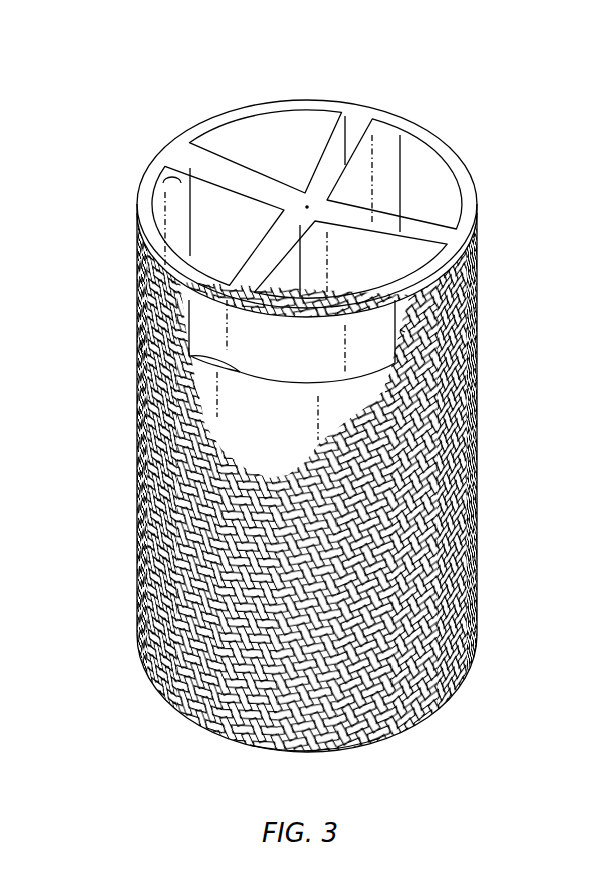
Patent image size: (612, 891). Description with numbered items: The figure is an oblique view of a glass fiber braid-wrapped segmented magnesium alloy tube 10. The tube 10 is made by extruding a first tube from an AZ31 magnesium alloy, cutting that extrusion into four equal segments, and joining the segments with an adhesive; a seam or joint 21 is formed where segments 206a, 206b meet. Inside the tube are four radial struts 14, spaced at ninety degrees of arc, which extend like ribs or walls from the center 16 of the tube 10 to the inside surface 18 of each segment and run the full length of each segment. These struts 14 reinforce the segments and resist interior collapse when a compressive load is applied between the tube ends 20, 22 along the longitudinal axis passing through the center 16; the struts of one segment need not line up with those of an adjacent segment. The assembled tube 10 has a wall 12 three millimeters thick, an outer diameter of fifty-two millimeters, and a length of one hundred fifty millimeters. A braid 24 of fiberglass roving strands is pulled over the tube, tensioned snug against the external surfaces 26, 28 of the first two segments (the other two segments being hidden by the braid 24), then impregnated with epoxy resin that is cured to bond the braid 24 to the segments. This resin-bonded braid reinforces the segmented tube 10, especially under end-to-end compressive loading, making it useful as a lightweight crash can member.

The segmented tube 10 is at (119, 124).
The wall 12 is at (200, 135).
The radial struts 14 is at (230, 180).
The center 16 is at (307, 206).
The inside surface 18 is at (163, 181).
The tube end 20 is at (437, 132).
The seam or joint 21 is at (165, 346).
The tube end 22 is at (404, 733).
The braid 24 is at (150, 376).
The external surface 26 is at (294, 366).
The external surface 28 is at (256, 438).
The segment 206a is at (370, 352).
The segment 206b is at (352, 399).